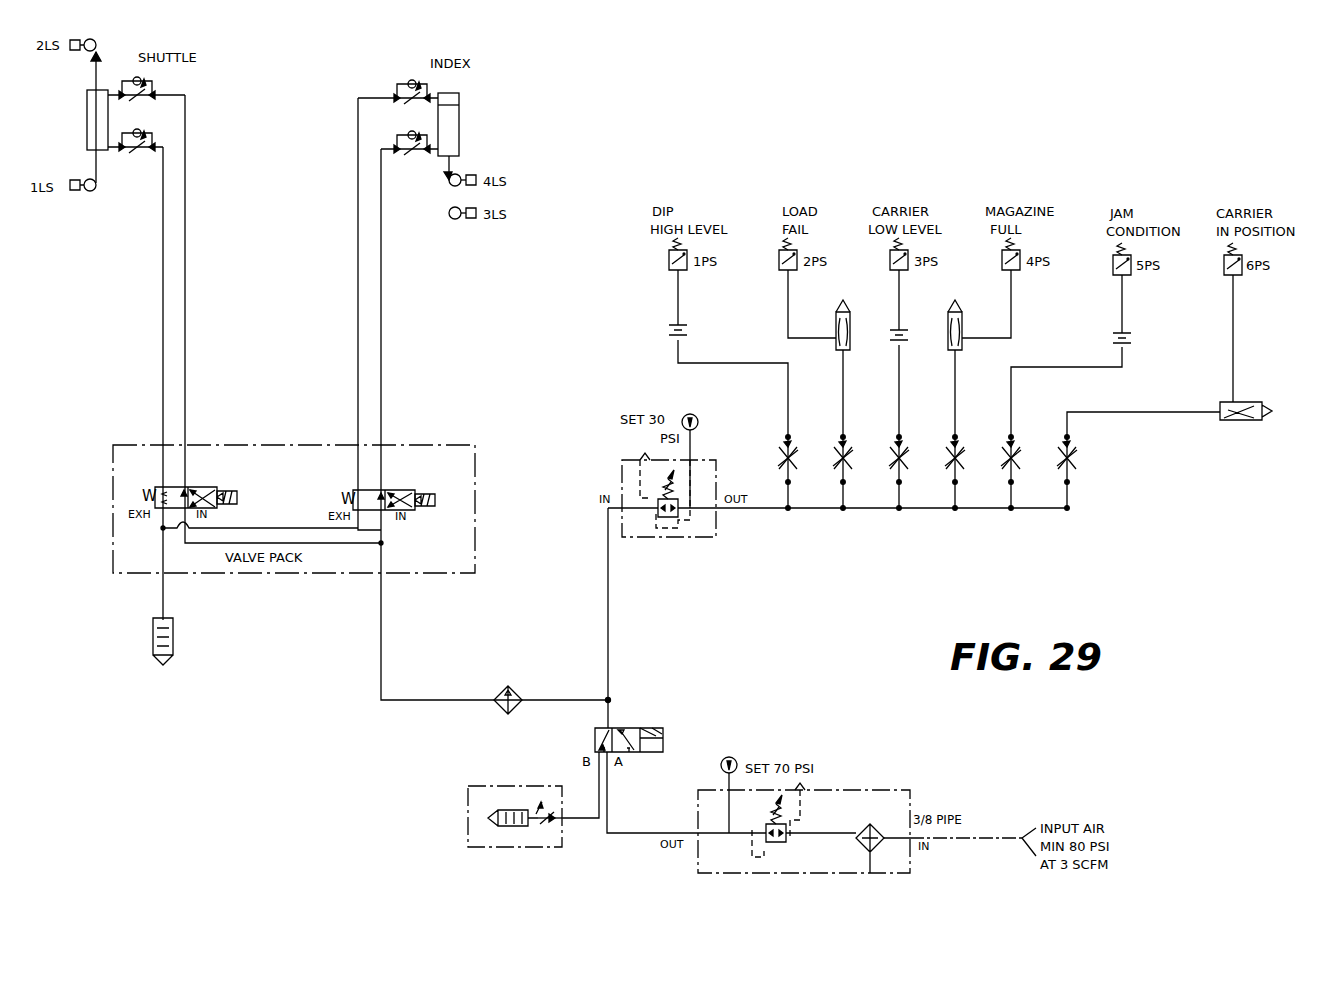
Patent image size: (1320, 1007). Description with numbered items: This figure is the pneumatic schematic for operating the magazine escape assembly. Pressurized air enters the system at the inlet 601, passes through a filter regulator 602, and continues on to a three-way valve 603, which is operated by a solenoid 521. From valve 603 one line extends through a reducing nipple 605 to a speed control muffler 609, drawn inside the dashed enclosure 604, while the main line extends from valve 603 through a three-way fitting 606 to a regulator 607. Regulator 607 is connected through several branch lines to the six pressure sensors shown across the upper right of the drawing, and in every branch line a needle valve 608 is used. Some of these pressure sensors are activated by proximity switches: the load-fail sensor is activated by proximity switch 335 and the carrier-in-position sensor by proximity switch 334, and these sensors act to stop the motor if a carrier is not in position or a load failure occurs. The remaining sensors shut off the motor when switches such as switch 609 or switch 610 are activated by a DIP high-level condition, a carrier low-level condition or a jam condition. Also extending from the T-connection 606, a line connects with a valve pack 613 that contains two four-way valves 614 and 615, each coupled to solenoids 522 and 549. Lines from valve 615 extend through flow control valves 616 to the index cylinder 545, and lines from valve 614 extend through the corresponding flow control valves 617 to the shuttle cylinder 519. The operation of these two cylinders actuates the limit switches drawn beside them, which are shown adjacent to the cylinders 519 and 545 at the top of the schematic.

The cylinder 519 is at (87, 128).
The flow control valves (shuttle) 617 is at (146, 115).
The flow control valves 616 is at (398, 117).
The cylinder 545 is at (460, 141).
The valve pack 613 is at (286, 448).
The solenoid 522 is at (226, 496).
The four-way valve 614 is at (220, 506).
The solenoid 549 is at (460, 480).
The four-way valve 615 is at (402, 512).
The regulator 607 is at (712, 542).
The needle valves 608 is at (782, 460).
The speed control muffler 609 is at (698, 332).
The proximity switch 335 is at (864, 325).
The switch 610 is at (913, 346).
The proximity switch 334 is at (1242, 424).
The three-way fitting 606 is at (608, 698).
The solenoid 521 is at (660, 732).
The three-way valve 603 is at (644, 753).
The exhaust muffler assembly 604 is at (470, 786).
The reducing nipple 605 is at (546, 828).
The filter regulator 602 is at (910, 796).
The air inlet 601 is at (1022, 832).